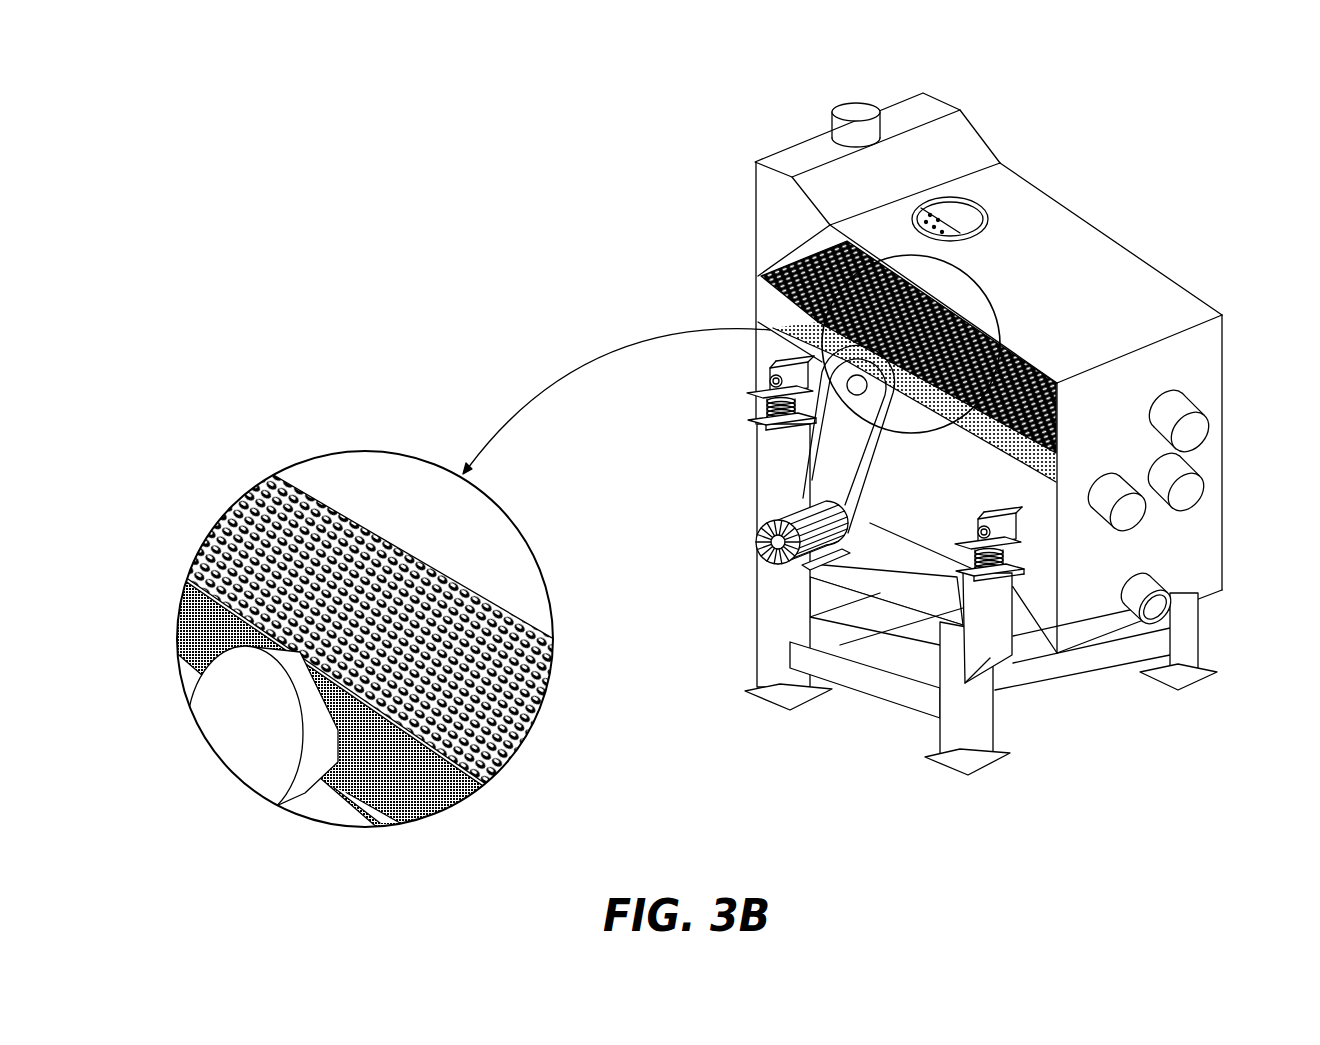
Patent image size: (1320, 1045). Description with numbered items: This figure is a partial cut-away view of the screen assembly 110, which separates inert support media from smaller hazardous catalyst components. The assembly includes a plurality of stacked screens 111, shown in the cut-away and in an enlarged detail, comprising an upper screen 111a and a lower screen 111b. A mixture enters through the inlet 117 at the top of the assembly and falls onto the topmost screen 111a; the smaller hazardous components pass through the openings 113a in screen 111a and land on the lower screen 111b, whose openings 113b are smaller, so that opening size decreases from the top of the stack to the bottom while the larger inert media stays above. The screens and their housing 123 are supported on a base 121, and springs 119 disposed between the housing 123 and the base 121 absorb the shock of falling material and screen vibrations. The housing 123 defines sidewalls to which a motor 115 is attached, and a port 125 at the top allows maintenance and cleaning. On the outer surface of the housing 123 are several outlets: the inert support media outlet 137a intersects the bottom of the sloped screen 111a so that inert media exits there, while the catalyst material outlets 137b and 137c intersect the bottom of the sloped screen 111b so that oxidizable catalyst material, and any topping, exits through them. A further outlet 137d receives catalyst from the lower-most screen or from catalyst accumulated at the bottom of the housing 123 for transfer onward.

The screen assembly 110 is at (1131, 69).
The plurality of stacked screens 111 is at (546, 572).
The screen 111a is at (761, 276).
The lower screen 111b is at (770, 333).
The openings 113a is at (275, 472).
The openings 113b is at (182, 597).
The motor 115 is at (827, 467).
The inlet 117 is at (862, 104).
The springs 119 is at (766, 409).
The base 121 is at (1188, 637).
The housing 123 is at (1212, 369).
The port 125 is at (967, 199).
The inert support media outlet 137a is at (1204, 428).
The catalyst material outlet 137b is at (1140, 513).
The catalyst material outlet 137c is at (1194, 497).
The outlet 137d is at (1170, 606).